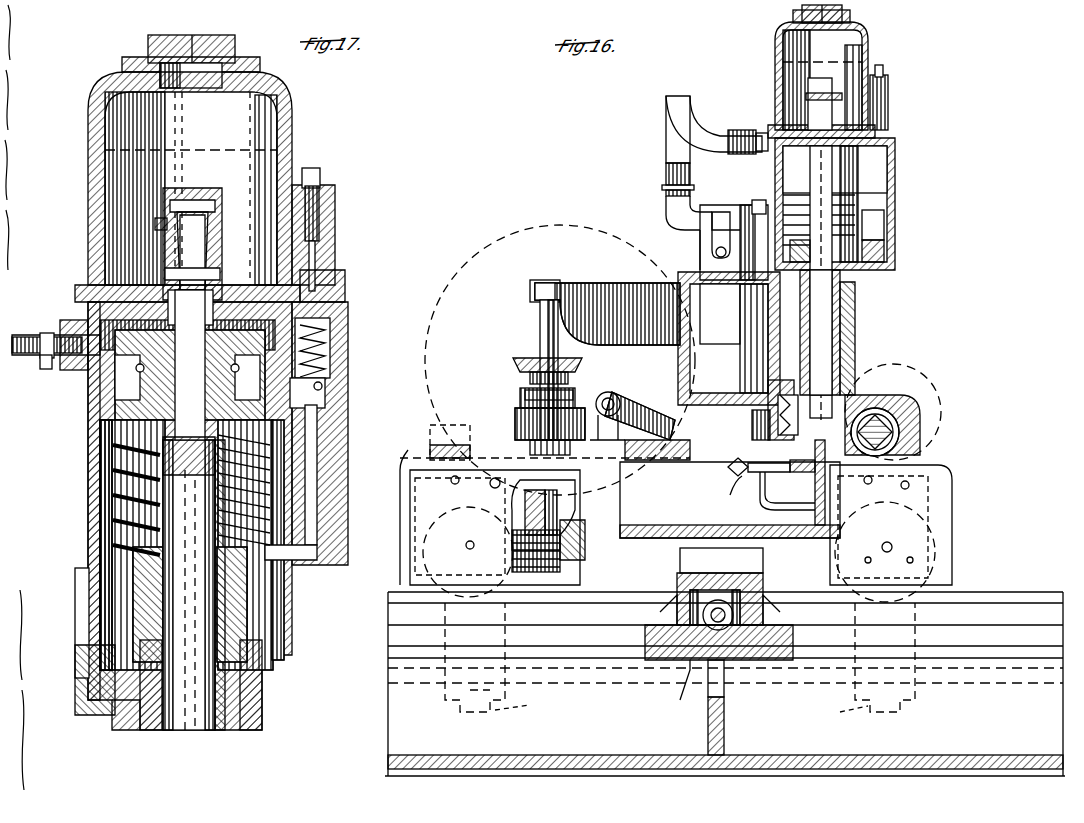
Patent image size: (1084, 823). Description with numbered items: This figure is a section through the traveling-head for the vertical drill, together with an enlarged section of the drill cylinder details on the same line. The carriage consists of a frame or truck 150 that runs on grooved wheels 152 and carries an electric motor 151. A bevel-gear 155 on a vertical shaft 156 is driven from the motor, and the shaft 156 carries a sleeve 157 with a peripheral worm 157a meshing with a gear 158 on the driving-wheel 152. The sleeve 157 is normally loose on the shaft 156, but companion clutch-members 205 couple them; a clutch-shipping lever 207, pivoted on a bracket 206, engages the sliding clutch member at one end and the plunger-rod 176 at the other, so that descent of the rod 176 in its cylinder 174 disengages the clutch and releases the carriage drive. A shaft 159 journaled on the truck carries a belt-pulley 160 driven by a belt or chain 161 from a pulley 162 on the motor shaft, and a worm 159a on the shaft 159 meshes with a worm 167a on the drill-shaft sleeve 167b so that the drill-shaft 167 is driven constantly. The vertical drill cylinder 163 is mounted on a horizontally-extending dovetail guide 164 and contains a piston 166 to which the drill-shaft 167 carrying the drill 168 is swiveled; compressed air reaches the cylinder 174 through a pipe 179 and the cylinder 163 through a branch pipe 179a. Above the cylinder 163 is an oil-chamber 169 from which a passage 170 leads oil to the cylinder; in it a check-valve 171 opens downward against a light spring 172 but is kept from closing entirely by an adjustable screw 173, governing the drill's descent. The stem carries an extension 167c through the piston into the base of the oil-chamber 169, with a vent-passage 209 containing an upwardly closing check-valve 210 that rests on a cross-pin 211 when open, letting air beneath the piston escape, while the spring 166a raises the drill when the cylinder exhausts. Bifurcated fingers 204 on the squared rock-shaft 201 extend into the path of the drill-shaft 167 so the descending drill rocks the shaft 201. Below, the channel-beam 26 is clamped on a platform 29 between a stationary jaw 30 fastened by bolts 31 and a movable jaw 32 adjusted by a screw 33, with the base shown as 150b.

In FIG. 17, the oil-chamber 169 is at (285, 127).
In FIG. 16, the oil-chamber 169 is at (868, 33).
In FIG. 17, the adjustable screw 173 is at (330, 203).
In FIG. 16, the adjustable screw 173 is at (888, 70).
In FIG. 17, the check-valve 210 is at (190, 205).
In FIG. 17, the cross-pin 211 is at (165, 275).
In FIG. 17, the stem extension 167c is at (212, 260).
In FIG. 16, the stem extension 167c is at (812, 108).
In FIG. 17, the vent-passage 209 is at (295, 285).
In FIG. 17, the light spring 172 is at (345, 336).
In FIG. 17, the check-valve 171 is at (320, 387).
In FIG. 17, the passage 170 is at (312, 422).
In FIG. 16, the passage 170 is at (880, 236).
In FIG. 17, the piston 166 is at (88, 384).
In FIG. 16, the piston 166 is at (825, 165).
In FIG. 17, the vertical drill cylinder 163 is at (88, 447).
In FIG. 16, the vertical drill cylinder 163 is at (872, 267).
In FIG. 17, the spring 166a is at (95, 488).
In FIG. 16, the spring 166a is at (775, 192).
In FIG. 17, the drill-shaft 167 is at (175, 722).
In FIG. 16, the drill-shaft 167 is at (832, 198).
In FIG. 17, the drill-shaft sleeve 167b is at (225, 722).
In FIG. 16, the drill-shaft sleeve 167b is at (845, 305).
In FIG. 17, the branch pipe 179a is at (18, 334).
In FIG. 16, the branch pipe 179a is at (668, 118).
In FIG. 16, the pipe 179 is at (725, 237).
In FIG. 16, the cylinder 174 is at (700, 250).
In FIG. 16, the belt or chain 161 is at (660, 265).
In FIG. 16, the electric motor 151 is at (545, 228).
In FIG. 16, the plunger-rod 176 is at (660, 333).
In FIG. 16, the pulley 162 is at (525, 328).
In FIG. 16, the vertical shaft 156 is at (545, 342).
In FIG. 16, the bevel-gear 155 is at (515, 365).
In FIG. 16, the clutch-members 205 is at (520, 425).
In FIG. 16, the bracket 206 is at (598, 430).
In FIG. 16, the clutch-shipping lever 207 is at (642, 422).
In FIG. 16, the worm 167a is at (755, 425).
In FIG. 16, the squared rock-shaft 201 is at (728, 467).
In FIG. 16, the drill 168 is at (815, 489).
In FIG. 16, the bifurcated fingers 204 is at (735, 500).
In FIG. 16, the channel-beam 26 is at (730, 500).
In FIG. 16, the dovetail guide 164 is at (860, 348).
In FIG. 16, the frame or truck 150 is at (855, 393).
In FIG. 16, the belt-pulley 160 is at (905, 405).
In FIG. 16, the shaft 159 is at (895, 420).
In FIG. 16, the worm 159a is at (900, 443).
In FIG. 16, the grooved wheels 152 is at (440, 577).
In FIG. 16, the sleeve 157 is at (530, 510).
In FIG. 16, the peripheral worm 157a is at (530, 535).
In FIG. 16, the gear 158 is at (537, 558).
In FIG. 16, the rail base 150b is at (725, 684).
In FIG. 16, the stationary jaw 30 is at (725, 590).
In FIG. 16, the screw 33 is at (680, 605).
In FIG. 16, the movable jaw 32 is at (760, 590).
In FIG. 16, the platforms 29 is at (695, 645).
In FIG. 16, the bolts 31 is at (745, 660).